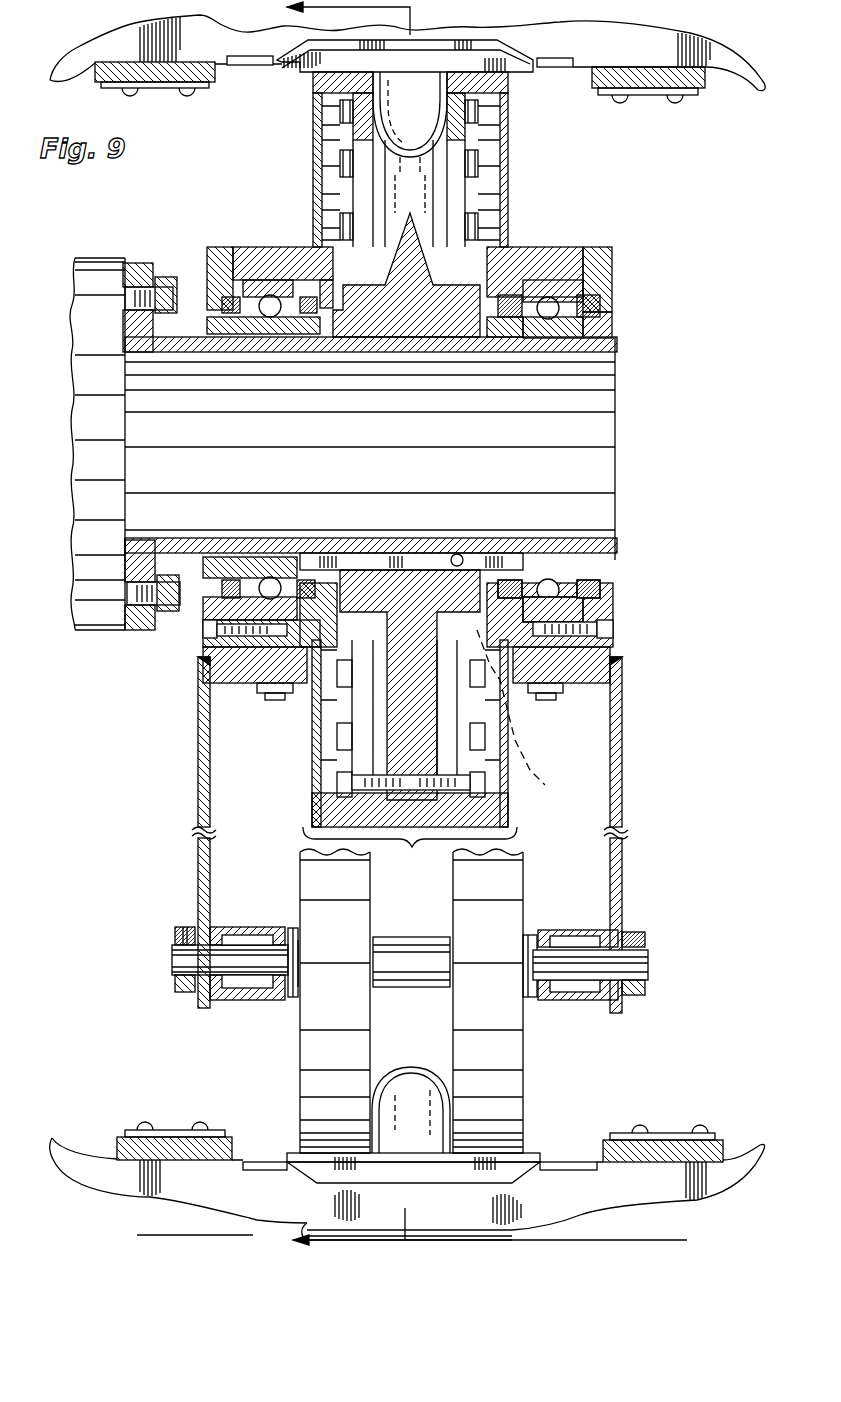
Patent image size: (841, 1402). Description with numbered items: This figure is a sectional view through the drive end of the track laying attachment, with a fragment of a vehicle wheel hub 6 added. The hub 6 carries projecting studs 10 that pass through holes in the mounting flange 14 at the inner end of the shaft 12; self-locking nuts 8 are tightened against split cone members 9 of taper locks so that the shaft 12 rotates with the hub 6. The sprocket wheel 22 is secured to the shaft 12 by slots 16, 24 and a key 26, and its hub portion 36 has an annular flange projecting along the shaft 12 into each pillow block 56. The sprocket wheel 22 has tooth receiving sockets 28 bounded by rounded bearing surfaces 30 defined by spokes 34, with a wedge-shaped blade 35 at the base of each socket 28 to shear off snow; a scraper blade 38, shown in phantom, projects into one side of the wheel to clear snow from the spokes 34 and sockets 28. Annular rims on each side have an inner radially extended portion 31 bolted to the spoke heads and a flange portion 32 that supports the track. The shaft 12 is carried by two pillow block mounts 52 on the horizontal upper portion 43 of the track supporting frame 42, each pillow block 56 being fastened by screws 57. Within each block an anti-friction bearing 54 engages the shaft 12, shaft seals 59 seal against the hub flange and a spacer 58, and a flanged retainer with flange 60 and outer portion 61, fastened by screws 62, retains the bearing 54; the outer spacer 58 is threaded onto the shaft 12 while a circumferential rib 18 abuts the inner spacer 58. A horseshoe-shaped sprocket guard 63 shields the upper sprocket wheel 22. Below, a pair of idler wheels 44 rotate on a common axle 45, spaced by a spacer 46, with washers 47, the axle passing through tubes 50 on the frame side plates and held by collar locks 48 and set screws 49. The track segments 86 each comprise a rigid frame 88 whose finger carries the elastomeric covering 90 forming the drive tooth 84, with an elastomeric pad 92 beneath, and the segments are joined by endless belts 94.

The wheel hub 6 is at (95, 622).
The nut 8 is at (182, 290).
The cone member 9 is at (162, 275).
The stud 10 is at (135, 268).
The shaft 12 is at (75, 550).
The mounting flange 14 is at (136, 622).
The slot 16 is at (457, 554).
The circumferential rib 18 is at (178, 338).
The sprocket wheel 22 is at (410, 758).
The slot 24 is at (345, 555).
The key 26 is at (382, 560).
The tooth receiving socket 28 is at (425, 183).
The bearing surface 30 is at (313, 130).
The inner radially extended portion 31 is at (457, 135).
The flange portion 32 is at (510, 80).
The spoke 34 is at (385, 690).
The wedge-shaped blade 35 is at (412, 236).
The hub portion 36 is at (318, 325).
The scraper blade 38 is at (523, 725).
The track supporting frame 42 is at (198, 762).
The horizontal upper portion 43 is at (240, 662).
The idler wheel 44 is at (352, 1007).
The axle 45 is at (172, 960).
The spacer 46 is at (412, 948).
The washer 47 is at (293, 928).
The collar lock 48 is at (186, 993).
The set screw 49 is at (184, 925).
The tube 50 is at (565, 930).
The pillow block mount 52 is at (620, 213).
The anti-friction bearing 54 is at (575, 335).
The pillow block 56 is at (553, 262).
The screw 57 is at (547, 701).
The spacer 58 is at (615, 328).
The shaft seal 59 is at (513, 328).
The flange 60 is at (583, 288).
The radially extended outer portion 61 is at (615, 252).
The screw 62 is at (612, 628).
The sprocket guard 63 is at (313, 160).
The drive tooth 84 is at (413, 1082).
The segment 86 is at (73, 1180).
The rigid frame 88 is at (150, 42).
The elastomeric covering 90 is at (415, 1075).
The elastomeric pad 92 is at (555, 1226).
The endless belt 94 is at (218, 84).